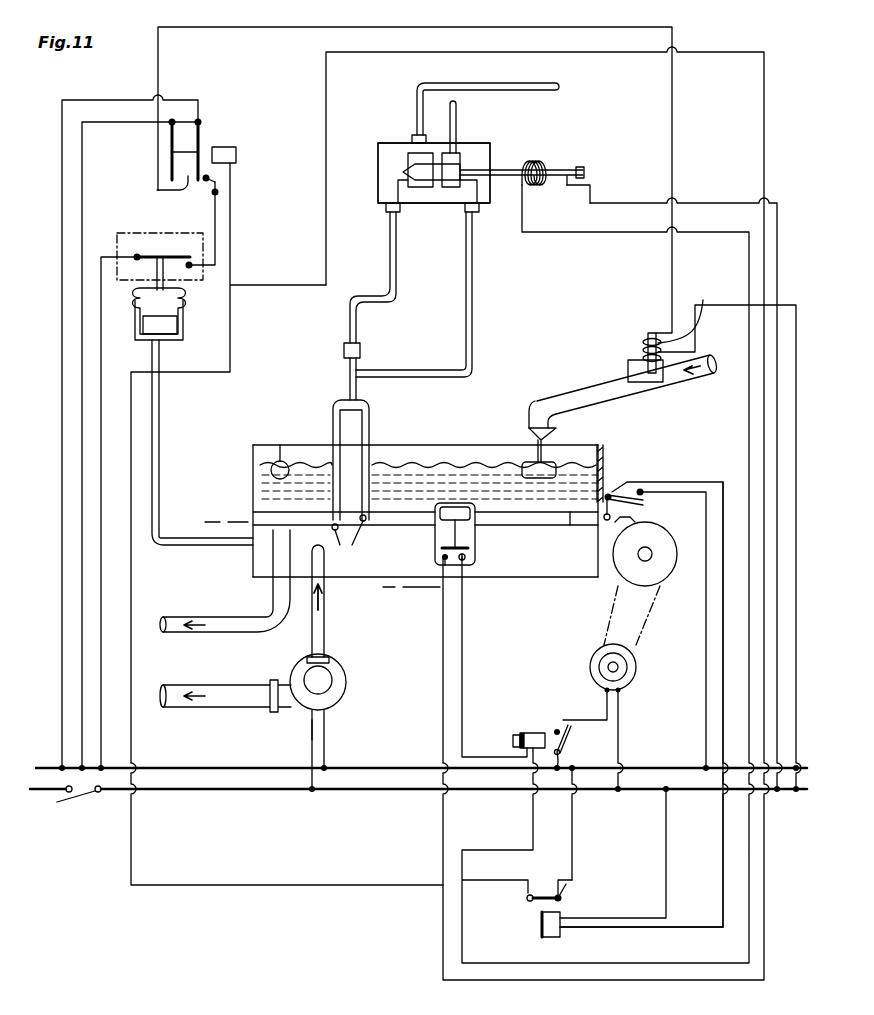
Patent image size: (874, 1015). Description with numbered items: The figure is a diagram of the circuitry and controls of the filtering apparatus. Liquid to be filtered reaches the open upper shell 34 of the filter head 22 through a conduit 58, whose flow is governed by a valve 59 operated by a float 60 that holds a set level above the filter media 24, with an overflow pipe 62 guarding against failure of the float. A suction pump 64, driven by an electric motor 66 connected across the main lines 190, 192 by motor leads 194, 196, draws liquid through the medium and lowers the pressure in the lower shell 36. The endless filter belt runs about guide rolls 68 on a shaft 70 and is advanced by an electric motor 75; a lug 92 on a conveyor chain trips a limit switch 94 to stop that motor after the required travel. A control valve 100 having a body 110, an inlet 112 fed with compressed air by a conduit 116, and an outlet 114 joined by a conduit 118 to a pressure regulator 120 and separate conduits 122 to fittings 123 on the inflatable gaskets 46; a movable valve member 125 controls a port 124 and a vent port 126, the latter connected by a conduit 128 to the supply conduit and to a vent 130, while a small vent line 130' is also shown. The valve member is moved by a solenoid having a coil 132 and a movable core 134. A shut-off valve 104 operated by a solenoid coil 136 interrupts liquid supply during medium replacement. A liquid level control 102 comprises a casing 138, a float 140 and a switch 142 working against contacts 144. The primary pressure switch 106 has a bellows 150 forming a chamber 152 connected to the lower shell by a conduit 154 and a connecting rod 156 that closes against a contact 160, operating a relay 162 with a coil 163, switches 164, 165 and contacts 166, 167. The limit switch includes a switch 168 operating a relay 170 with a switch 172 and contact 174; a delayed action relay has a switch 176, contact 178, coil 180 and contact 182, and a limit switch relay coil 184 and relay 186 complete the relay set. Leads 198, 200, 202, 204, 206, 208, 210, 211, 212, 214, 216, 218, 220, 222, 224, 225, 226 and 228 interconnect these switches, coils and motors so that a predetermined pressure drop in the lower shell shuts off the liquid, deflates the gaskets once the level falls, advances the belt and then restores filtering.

The filter head 22 is at (238, 490).
The filter media 24 is at (584, 590).
The upper shell 34 is at (253, 468).
The lower shell 36 is at (252, 567).
The inflatable gaskets 46 is at (573, 527).
The conduit 58 is at (139, 256).
The valve 59 is at (525, 435).
The float 60 is at (545, 463).
The overflow relief drain or pipe 62 is at (280, 461).
The suction or exhaust pump 64 is at (338, 668).
The electric motor 66 is at (333, 683).
The guide rolls 68 is at (663, 540).
The shaft 70 is at (650, 554).
The electric motor 75 is at (631, 675).
The cam or lug 92 is at (240, 520).
The limit switch 94 is at (621, 473).
The control valve 100 is at (511, 141).
The liquid level responsive control 102 is at (480, 561).
The shut-off valve 104 is at (646, 326).
The pressure responsive switch 106 is at (188, 243).
The valve body 110 is at (378, 143).
The inlet 112 is at (412, 143).
The outlet 114 is at (392, 193).
The conduit 116 is at (484, 83).
The conduit 118 is at (350, 320).
The pressure regulator 120 is at (362, 347).
The conduits 122 is at (336, 418).
The fittings 123 is at (351, 535).
The port 124 is at (405, 163).
The movable valve member 125 is at (428, 180).
The port 126 is at (460, 160).
The conduit 128 is at (472, 263).
The vent 130 is at (599, 189).
The vent pipe 130' is at (477, 123).
The coil 132 is at (566, 166).
The movable core 134 is at (502, 170).
The solenoid coil 136 is at (686, 312).
The casing 138 is at (437, 555).
The float 140 is at (460, 503).
The switch 142 is at (460, 545).
The contacts 144 is at (442, 568).
The diaphragm or bellows 150 is at (181, 311).
The chamber 152 is at (170, 328).
The connecting conduit 154 is at (160, 393).
The connecting rod 156 is at (150, 283).
The contact 160 is at (198, 263).
The relay 162 is at (199, 92).
The coil 163 is at (232, 147).
The switch 164 is at (200, 132).
The switch 165 is at (172, 140).
The contact 166 is at (220, 176).
The contact 167 is at (170, 194).
The switch 168 is at (630, 495).
The relay 170 is at (645, 490).
The switch 172 is at (525, 922).
The contact 174 is at (548, 940).
The switch 176 is at (563, 898).
The contact 178 is at (563, 895).
The coil 180 is at (565, 745).
The contact 182 is at (558, 720).
The limit switch relay coil 184 is at (528, 733).
The relay 186 is at (513, 742).
The main line 190 is at (418, 768).
The main line 192 is at (378, 789).
The motor lead 194 is at (230, 736).
The motor lead 196 is at (323, 736).
The lead 198 is at (101, 590).
The lead 200 is at (215, 228).
The lead 202 is at (230, 286).
The lead 204 is at (574, 808).
The lead 206 is at (62, 412).
The lead 208 is at (220, 192).
The lead 210 is at (158, 80).
The lead 211 is at (82, 546).
The lead 212 is at (732, 300).
The lead 214 is at (326, 93).
The lead 216 is at (462, 638).
The lead 218 is at (558, 233).
The lead 220 is at (733, 202).
The lead 222 is at (621, 726).
The lead 224 is at (710, 648).
The lead 225 is at (573, 771).
The lead 226 is at (723, 592).
The lead 228 is at (666, 841).